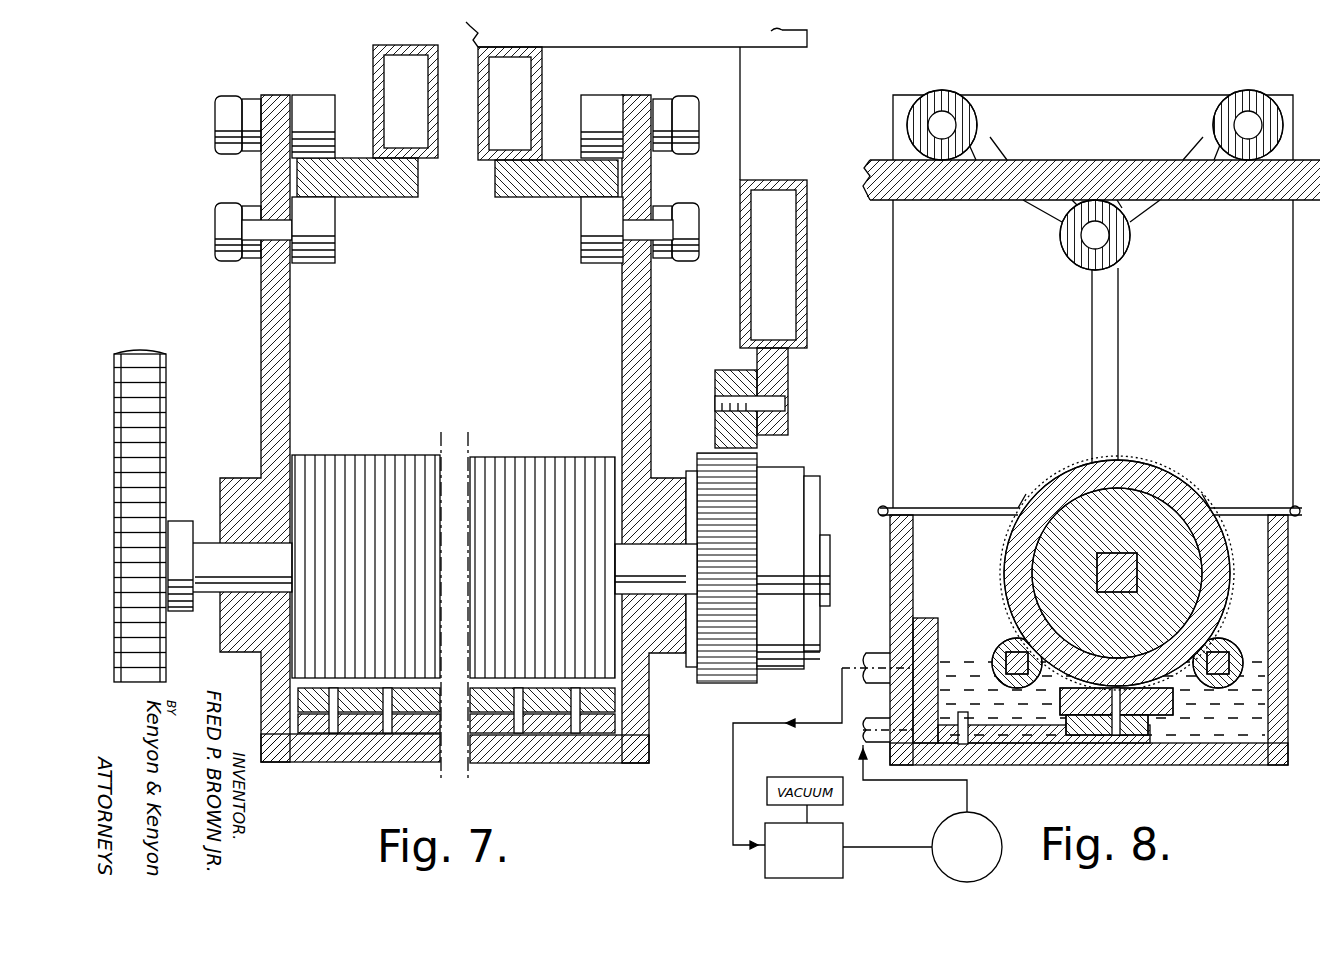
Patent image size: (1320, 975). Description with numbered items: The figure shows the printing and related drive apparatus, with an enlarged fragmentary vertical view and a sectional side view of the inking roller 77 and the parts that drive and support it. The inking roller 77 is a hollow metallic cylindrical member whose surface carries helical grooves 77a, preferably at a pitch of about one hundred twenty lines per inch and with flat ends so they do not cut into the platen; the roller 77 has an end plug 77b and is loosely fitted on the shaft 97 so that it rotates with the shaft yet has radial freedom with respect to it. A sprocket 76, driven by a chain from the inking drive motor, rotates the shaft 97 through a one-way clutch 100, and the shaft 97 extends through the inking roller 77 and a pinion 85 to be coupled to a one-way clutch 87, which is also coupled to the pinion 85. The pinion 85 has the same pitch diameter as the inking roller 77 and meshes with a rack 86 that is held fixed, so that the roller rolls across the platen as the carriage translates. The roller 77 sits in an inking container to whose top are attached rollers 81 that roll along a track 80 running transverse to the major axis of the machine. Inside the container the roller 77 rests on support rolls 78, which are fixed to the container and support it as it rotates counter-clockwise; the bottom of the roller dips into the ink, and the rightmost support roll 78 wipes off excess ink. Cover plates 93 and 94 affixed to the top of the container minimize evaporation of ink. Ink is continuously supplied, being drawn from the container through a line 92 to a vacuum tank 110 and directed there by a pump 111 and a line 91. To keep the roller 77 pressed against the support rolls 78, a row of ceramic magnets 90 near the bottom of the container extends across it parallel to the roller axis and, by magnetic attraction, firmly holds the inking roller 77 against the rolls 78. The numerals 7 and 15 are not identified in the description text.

In FIG. 8, the tank 7 is at (1288, 653).
In FIG. 7, the drive gear 15 is at (159, 403).
In FIG. 7, the sprocket 76 is at (174, 505).
In FIG. 7, the inking roller 77 is at (404, 420).
In FIG. 8, the inking roller 77 is at (1117, 563).
In FIG. 7, the helical grooves 77a is at (515, 473).
In FIG. 8, the end plug 77b is at (1160, 490).
In FIG. 8, the support rolls 78 is at (1007, 643).
In FIG. 7, the track 80 is at (388, 197).
In FIG. 7, the rollers 81 is at (327, 100).
In FIG. 8, the rollers 81 is at (977, 120).
In FIG. 7, the pinion 85 is at (725, 679).
In FIG. 7, the rack 86 is at (718, 373).
In FIG. 7, the one-way clutch 87 is at (793, 476).
In FIG. 7, the ceramic magnets 90 is at (593, 726).
In FIG. 8, the ceramic magnets 90 is at (1167, 705).
In FIG. 8, the line 91 is at (968, 795).
In FIG. 8, the line 92 is at (880, 657).
In FIG. 8, the cover plate 93 is at (1245, 507).
In FIG. 8, the cover plate 94 is at (968, 508).
In FIG. 7, the shaft 97 is at (255, 553).
In FIG. 7, the one-way clutch 100 is at (188, 612).
In FIG. 8, the vacuum tank 110 is at (843, 827).
In FIG. 8, the pump 111 is at (1002, 863).